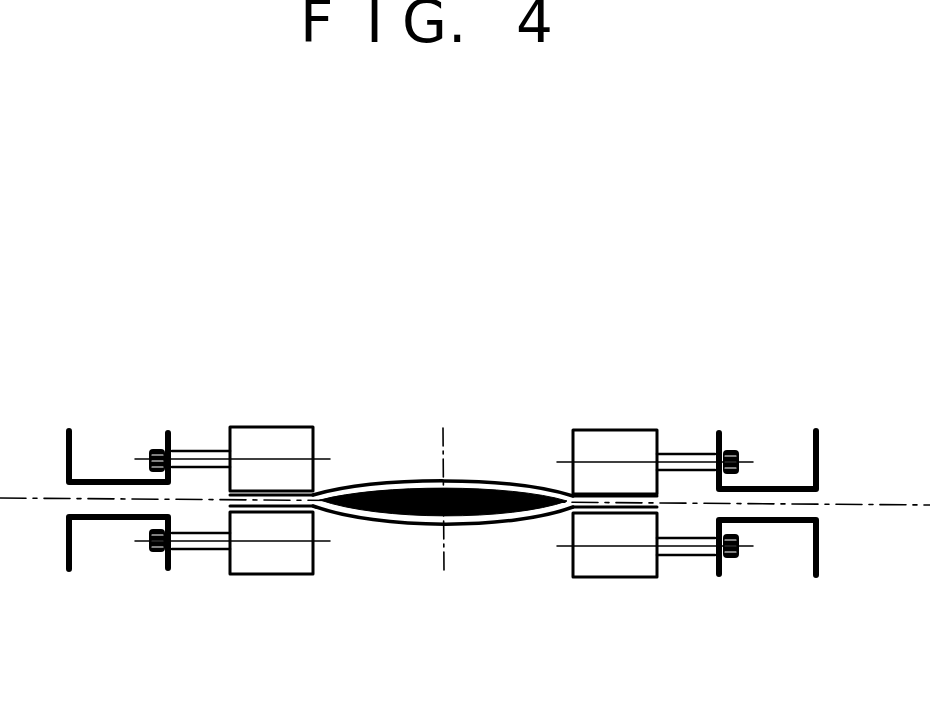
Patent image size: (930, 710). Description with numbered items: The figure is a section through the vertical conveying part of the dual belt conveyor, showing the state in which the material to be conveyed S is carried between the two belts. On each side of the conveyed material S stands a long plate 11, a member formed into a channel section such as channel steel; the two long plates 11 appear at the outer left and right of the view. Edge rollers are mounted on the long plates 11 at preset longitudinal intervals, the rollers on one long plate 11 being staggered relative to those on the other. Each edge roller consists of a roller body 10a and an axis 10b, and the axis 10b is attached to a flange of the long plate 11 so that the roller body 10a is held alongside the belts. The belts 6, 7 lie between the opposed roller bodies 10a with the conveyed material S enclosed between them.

The bulged portion 6 is at (485, 526).
The sheath 7 is at (490, 482).
The material to be conveyed S is at (412, 517).
The roller body 10a is at (290, 426).
The axis 10b is at (203, 451).
The long plate 11 is at (782, 603).